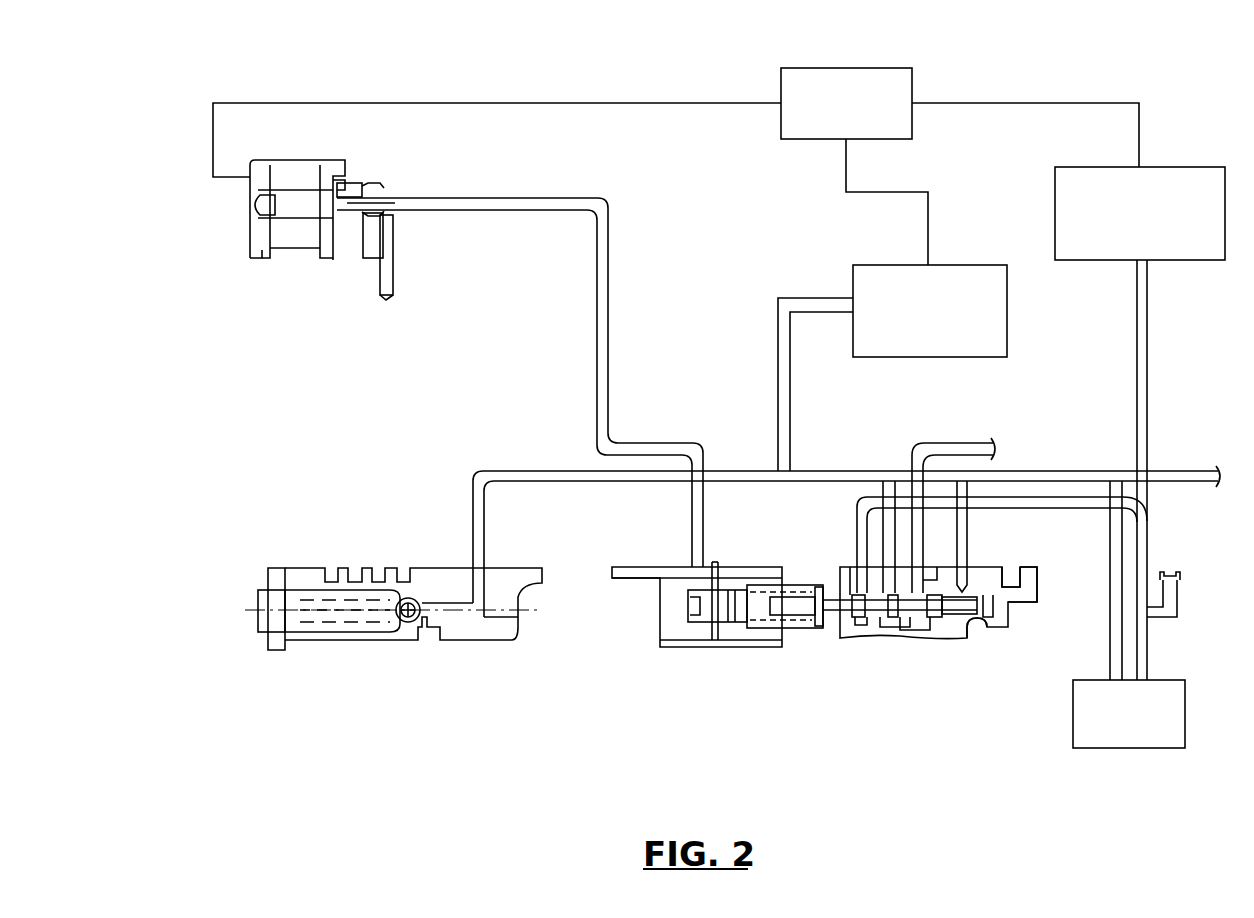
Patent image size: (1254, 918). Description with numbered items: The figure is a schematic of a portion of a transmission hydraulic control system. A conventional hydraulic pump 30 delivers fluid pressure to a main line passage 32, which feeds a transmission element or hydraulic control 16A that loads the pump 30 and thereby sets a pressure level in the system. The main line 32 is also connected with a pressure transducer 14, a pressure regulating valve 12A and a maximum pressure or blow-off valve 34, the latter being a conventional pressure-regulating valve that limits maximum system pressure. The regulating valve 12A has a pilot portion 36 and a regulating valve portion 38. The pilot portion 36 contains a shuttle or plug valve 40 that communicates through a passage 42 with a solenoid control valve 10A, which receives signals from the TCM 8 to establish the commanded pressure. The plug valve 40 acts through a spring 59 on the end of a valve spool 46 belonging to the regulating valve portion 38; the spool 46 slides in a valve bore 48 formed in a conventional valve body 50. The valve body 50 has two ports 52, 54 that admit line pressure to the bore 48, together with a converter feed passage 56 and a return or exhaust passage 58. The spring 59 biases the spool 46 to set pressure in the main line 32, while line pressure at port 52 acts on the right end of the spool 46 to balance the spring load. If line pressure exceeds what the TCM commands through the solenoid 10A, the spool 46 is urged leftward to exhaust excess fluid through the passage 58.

The transmission control module (TCM) 8 is at (847, 68).
The solenoid control valve 10A is at (298, 258).
The pressure regulating valve 12A is at (861, 640).
The pressure transducer 14 is at (968, 264).
The hydraulic control 16A is at (1192, 166).
The hydraulic pump 30 is at (1170, 679).
The main line passage 32 is at (1108, 578).
The blow-off valve 34 is at (413, 646).
The pilot portion 36 is at (768, 564).
The regulating valve portion 38 is at (1008, 566).
The plug valve 40 is at (727, 607).
The passage 42 is at (668, 443).
The valve spool 46 is at (914, 624).
The valve bore 48 is at (968, 640).
The valve body 50 is at (1038, 576).
The port 52 is at (963, 572).
The port 54 is at (890, 565).
The converter feed passage 56 is at (916, 455).
The exhaust passage 58 is at (856, 520).
The spring 59 is at (808, 634).